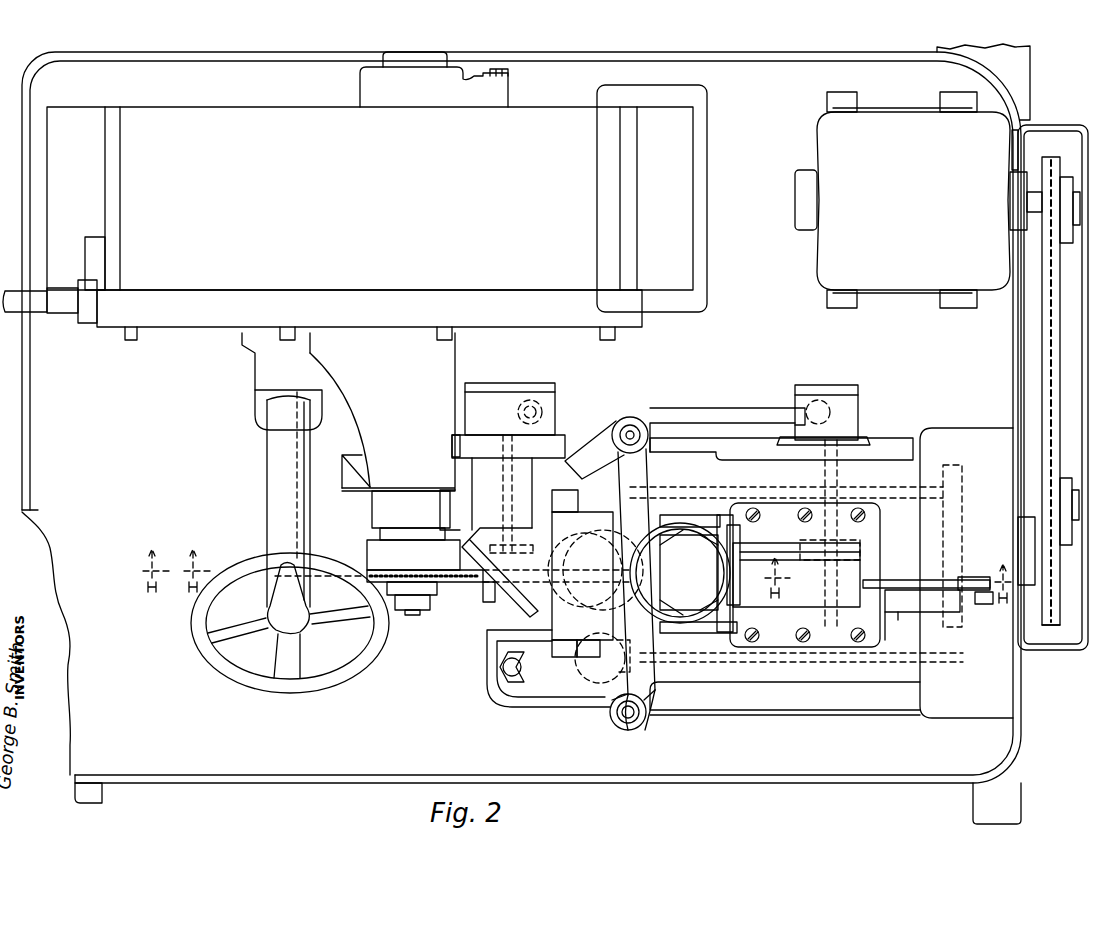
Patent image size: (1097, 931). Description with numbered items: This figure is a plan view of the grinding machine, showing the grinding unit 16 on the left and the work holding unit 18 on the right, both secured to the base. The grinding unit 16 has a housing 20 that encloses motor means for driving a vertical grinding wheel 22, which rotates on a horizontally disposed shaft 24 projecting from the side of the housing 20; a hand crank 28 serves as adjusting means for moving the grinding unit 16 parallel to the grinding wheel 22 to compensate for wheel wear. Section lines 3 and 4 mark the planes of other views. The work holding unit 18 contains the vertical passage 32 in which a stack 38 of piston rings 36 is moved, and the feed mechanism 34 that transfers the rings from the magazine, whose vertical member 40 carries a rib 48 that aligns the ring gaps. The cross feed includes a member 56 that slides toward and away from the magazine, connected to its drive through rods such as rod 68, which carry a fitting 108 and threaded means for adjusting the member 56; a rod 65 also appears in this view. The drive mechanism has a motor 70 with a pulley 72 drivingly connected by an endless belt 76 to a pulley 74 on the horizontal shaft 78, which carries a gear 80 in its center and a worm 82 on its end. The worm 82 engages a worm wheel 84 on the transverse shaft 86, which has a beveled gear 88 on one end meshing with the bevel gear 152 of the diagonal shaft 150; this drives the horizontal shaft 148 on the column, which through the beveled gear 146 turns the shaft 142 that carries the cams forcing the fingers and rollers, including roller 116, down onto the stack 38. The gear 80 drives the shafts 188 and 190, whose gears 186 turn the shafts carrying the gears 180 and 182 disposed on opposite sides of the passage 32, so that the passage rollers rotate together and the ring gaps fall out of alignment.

The section line 3- 3 is at (466, 569).
The section line 4- 4 is at (994, 603).
The grinding unit 16 is at (164, 341).
The work holding unit 18 is at (887, 438).
The housing 20 is at (125, 165).
The grinding wheel 22 is at (367, 555).
The shaft 24 is at (415, 612).
The hand crank 28 is at (232, 673).
The passage 32 is at (572, 533).
The feed mechanism 34 is at (661, 582).
The piston rings 36 is at (635, 532).
The stack 38 is at (548, 640).
The vertical member 40 is at (640, 597).
The rib 48 is at (645, 573).
The member 56 is at (850, 580).
The rod 65 is at (925, 570).
The rod 68 is at (910, 615).
The motor 70 is at (900, 127).
The pulley 72 is at (1058, 172).
The pulley 74 is at (1052, 607).
The endless belt 76 is at (1047, 372).
The horizontal shaft 78 is at (973, 548).
The gear 80 is at (955, 540).
The worm 82 is at (860, 540).
The worm wheel 84 is at (800, 540).
The shaft 86 is at (850, 487).
The beveled gear 88 is at (850, 440).
The fitting 108 is at (950, 600).
The roller 116 is at (770, 545).
The shaft 142 is at (575, 570).
The beveled gear 146 is at (535, 624).
The horizontal shaft 148 is at (510, 440).
The diagonal shaft 150 is at (725, 415).
The bevel gear 152 is at (822, 398).
The gear 180 is at (628, 698).
The gear 182 is at (565, 480).
The gears 186 is at (643, 445).
The shaft 188 is at (775, 670).
The shaft 190 is at (742, 487).